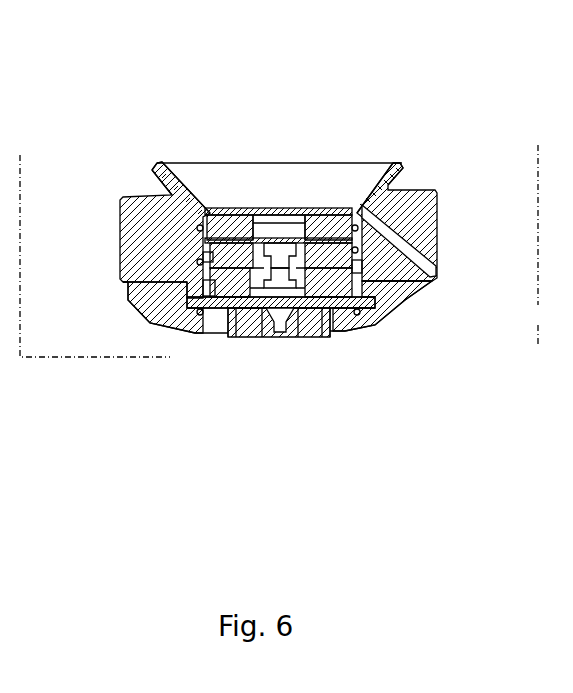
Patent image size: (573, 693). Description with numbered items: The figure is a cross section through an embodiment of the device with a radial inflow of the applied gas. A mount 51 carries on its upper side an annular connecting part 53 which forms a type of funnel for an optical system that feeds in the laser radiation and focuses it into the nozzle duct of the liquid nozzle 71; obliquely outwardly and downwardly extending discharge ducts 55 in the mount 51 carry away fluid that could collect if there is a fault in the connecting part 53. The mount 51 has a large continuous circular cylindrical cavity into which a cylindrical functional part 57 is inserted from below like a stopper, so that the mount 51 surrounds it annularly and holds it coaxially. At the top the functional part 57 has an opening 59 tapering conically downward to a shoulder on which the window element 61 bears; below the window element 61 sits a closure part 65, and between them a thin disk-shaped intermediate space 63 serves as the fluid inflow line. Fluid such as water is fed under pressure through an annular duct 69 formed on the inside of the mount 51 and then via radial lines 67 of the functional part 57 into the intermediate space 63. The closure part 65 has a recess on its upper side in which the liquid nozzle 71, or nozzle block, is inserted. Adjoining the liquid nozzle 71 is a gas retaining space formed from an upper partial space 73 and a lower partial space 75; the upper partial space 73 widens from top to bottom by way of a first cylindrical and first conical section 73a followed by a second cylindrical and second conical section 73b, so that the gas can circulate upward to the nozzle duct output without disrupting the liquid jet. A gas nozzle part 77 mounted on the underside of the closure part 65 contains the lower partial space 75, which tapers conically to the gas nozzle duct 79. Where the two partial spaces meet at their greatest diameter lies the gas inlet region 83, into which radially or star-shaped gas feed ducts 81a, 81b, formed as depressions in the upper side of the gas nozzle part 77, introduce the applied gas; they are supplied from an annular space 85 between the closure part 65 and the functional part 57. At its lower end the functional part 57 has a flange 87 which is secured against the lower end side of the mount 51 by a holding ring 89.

The mount 51 is at (427, 233).
The annular connecting part 53 is at (395, 160).
The discharge ducts 55 is at (432, 263).
The functional part 57 is at (337, 212).
The opening 59 is at (260, 256).
The window element 61 is at (292, 236).
The intermediate space 63 is at (268, 260).
The closure part 65 is at (259, 232).
The radial lines 67 is at (221, 222).
The annular duct 69 is at (224, 260).
The liquid nozzle 71 is at (282, 262).
The upper partial space 73 is at (372, 293).
The first conical section 73a is at (365, 281).
The second conical section 73b is at (378, 311).
The lower partial space 75 is at (300, 338).
The gas nozzle part 77 is at (331, 338).
The gas nozzle duct 79 is at (280, 333).
The gas feed duct 81a is at (239, 313).
The gas feed duct 81b is at (336, 334).
The gas inlet region 83 is at (266, 316).
The annular space 85 is at (194, 259).
The flange 87 is at (222, 291).
The holding ring 89 is at (142, 311).